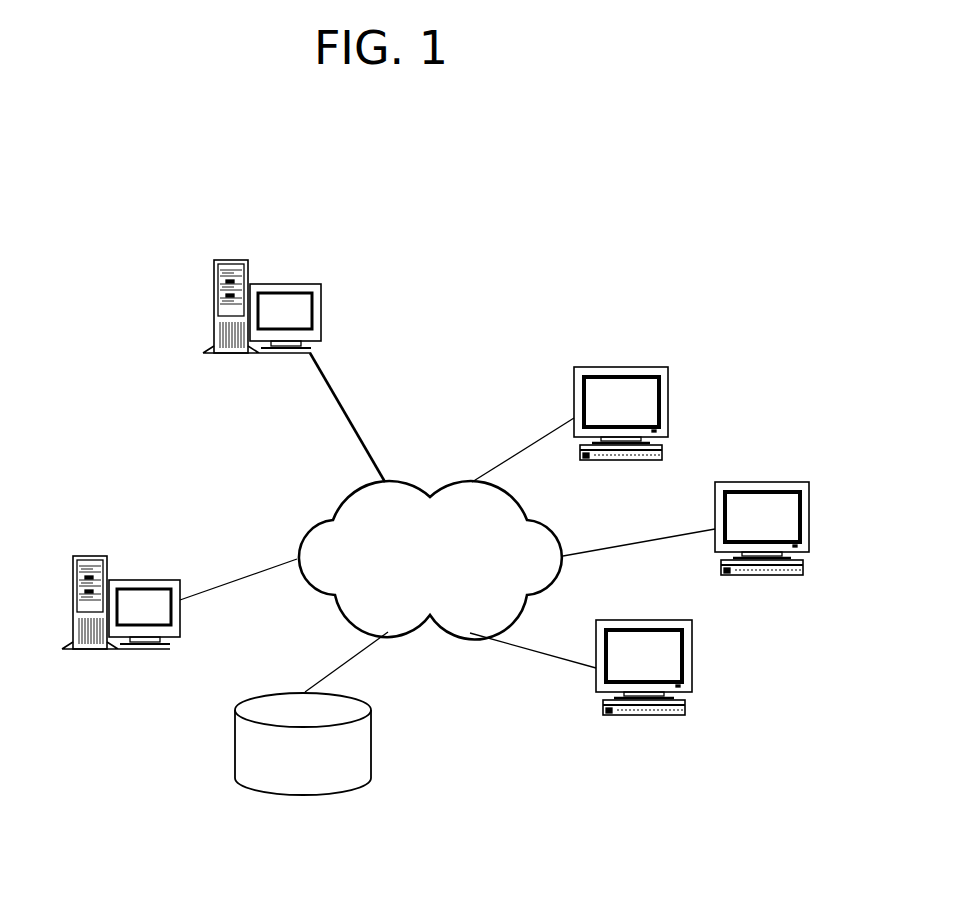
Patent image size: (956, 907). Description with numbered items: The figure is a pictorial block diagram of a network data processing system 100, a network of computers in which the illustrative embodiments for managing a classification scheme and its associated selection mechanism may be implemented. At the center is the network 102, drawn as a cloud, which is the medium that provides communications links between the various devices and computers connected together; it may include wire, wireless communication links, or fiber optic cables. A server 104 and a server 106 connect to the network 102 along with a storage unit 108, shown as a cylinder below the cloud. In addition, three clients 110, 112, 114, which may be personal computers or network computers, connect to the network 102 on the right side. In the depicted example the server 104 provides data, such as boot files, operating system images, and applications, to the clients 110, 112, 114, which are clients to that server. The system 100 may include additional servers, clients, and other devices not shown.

The network data processing system 100 is at (110, 418).
The network 102 is at (415, 580).
The server 104 is at (285, 284).
The server 106 is at (145, 580).
The storage unit 108 is at (303, 795).
The client 110 is at (620, 367).
The client 112 is at (761, 482).
The client 114 is at (692, 665).